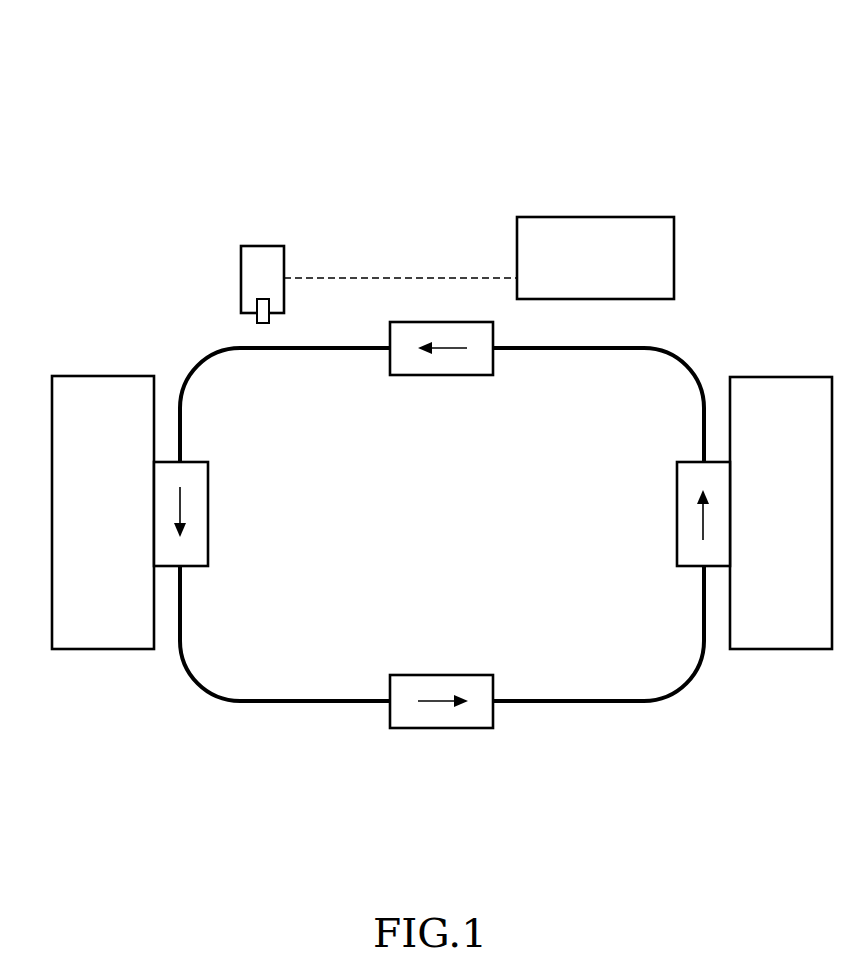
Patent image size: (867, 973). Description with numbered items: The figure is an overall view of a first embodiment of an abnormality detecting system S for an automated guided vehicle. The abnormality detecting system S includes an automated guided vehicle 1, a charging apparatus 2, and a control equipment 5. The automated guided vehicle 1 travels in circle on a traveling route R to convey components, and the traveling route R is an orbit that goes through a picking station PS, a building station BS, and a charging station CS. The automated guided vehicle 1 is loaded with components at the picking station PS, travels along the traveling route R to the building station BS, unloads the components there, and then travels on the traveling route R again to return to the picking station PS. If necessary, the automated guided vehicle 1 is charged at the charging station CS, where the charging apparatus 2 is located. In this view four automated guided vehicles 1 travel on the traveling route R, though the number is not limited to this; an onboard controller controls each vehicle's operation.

The automated guided vehicle 1 is at (411, 330).
The charging apparatus 2 is at (262, 258).
The control equipment 5 is at (616, 226).
The abnormality detecting system S is at (749, 103).
The charging station CS is at (220, 246).
The building station BS is at (108, 372).
The picking station PS is at (780, 373).
The traveling route R is at (598, 699).